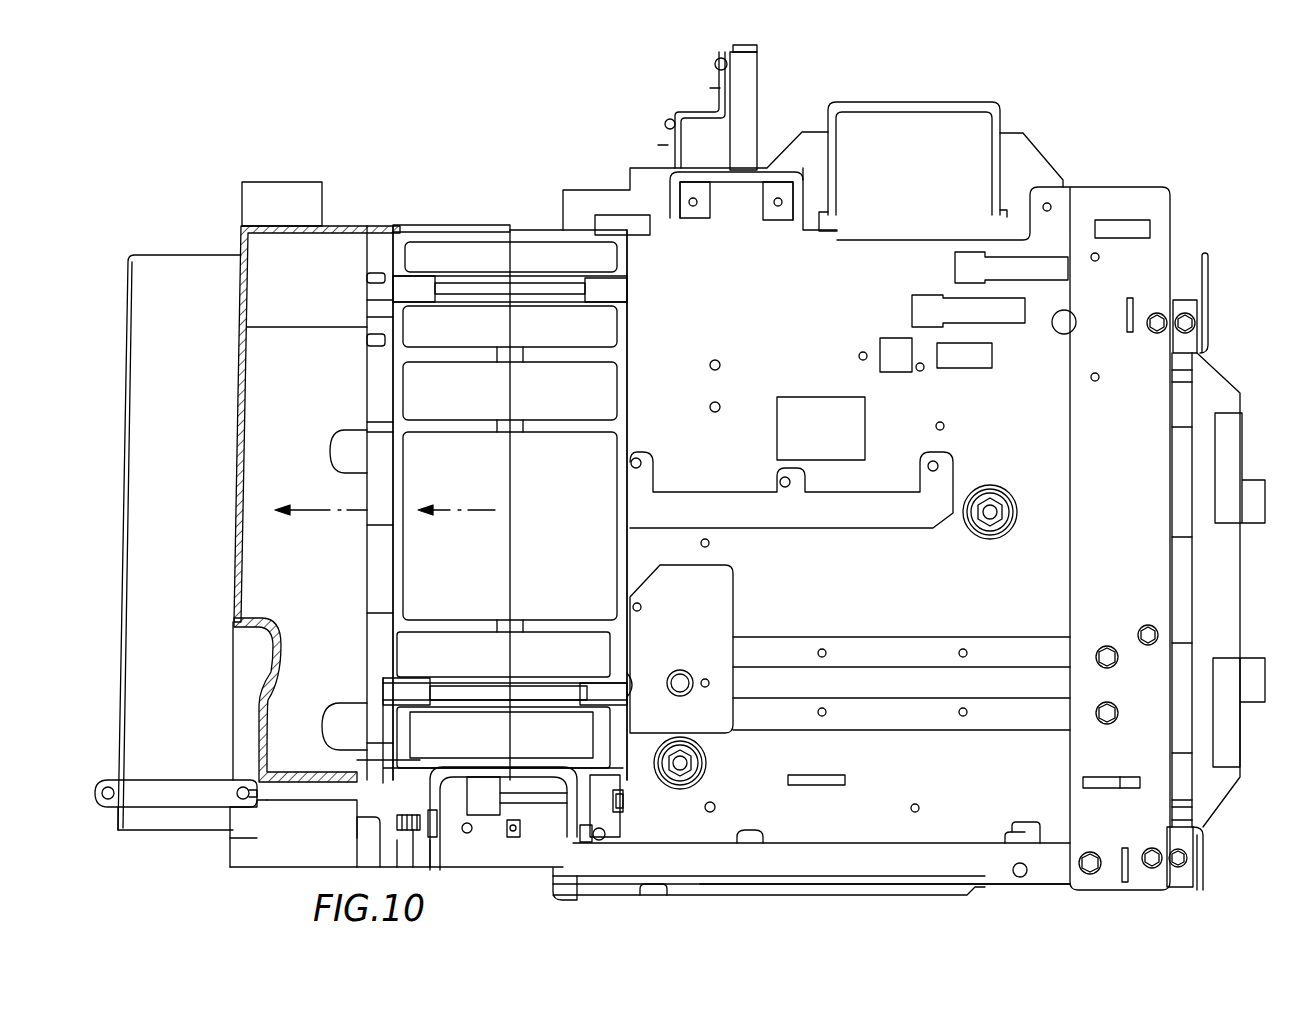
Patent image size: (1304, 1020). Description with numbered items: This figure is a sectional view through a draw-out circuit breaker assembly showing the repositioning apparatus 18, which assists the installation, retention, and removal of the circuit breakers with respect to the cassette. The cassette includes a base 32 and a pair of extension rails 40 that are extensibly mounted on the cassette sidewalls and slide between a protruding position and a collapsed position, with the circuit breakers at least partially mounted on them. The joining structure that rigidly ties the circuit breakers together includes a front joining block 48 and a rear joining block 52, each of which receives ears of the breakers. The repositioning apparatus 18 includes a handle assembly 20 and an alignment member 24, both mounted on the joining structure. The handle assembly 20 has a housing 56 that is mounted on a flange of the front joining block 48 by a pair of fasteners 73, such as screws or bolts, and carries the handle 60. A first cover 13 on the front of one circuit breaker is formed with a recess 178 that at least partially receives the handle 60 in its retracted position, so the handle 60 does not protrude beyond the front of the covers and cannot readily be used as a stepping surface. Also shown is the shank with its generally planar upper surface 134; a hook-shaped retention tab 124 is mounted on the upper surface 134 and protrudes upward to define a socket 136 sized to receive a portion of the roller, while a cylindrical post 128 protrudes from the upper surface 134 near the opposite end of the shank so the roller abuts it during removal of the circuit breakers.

The first cover 13 is at (241, 521).
The recess 178 is at (259, 633).
The front joining block 48 is at (481, 226).
The rear joining block 52 is at (543, 229).
The handle 60 is at (165, 812).
The handle assembly 20 is at (297, 808).
The housing 56 is at (332, 802).
The fasteners 73 is at (440, 835).
The post 128 is at (548, 895).
The base 32 is at (600, 890).
The alignment member 24 is at (606, 830).
The extension rails 40 is at (904, 637).
The socket 136 is at (1012, 840).
The retention tab 124 is at (1019, 822).
The upper surface 134 is at (770, 846).
The repositioning apparatus 18 is at (868, 898).